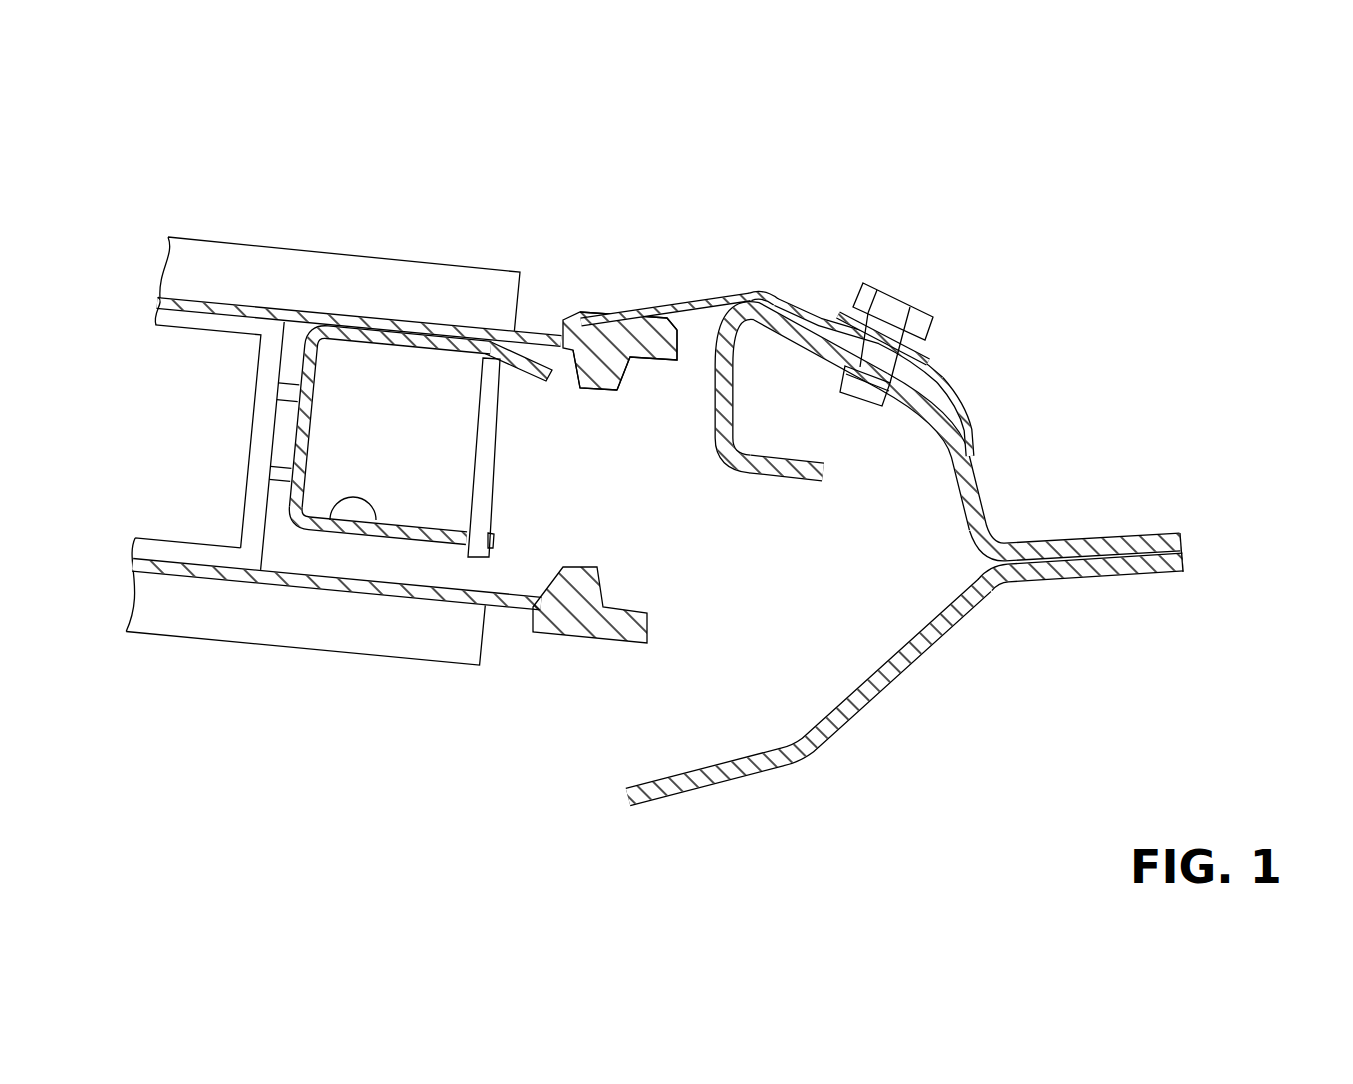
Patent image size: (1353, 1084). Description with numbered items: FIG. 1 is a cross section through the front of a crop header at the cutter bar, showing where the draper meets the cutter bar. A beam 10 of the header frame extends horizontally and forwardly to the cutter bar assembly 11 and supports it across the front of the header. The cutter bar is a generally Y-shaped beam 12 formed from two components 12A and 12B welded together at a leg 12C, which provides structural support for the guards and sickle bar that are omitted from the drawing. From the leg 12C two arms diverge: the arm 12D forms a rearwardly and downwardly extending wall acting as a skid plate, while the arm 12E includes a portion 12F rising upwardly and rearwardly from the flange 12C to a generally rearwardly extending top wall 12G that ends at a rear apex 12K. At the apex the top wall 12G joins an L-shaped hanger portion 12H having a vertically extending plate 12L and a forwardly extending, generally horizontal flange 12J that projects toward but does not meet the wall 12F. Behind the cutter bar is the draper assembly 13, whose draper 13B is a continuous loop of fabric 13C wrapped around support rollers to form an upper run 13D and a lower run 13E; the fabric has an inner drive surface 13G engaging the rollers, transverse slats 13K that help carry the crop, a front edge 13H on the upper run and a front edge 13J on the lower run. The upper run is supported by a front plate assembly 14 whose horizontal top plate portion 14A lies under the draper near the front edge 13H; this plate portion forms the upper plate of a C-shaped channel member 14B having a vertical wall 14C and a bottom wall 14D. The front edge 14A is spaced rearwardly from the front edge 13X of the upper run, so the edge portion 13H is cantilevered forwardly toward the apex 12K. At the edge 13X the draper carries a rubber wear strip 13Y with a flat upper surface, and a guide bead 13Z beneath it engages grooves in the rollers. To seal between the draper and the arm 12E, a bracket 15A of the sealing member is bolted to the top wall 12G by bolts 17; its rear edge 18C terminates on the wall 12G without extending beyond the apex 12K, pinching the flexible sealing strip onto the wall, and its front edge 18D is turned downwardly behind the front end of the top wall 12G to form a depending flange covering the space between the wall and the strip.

The beam 10 is at (702, 473).
The cutter bar assembly 11 is at (929, 511).
The cutter bar support beam 12 is at (929, 511).
The beam component 12A is at (1185, 540).
The beam component 12B is at (1120, 580).
The leg 12C is at (1106, 546).
The arm 12D is at (738, 755).
The arm 12E is at (930, 356).
The portion 12F is at (975, 480).
The top wall 12G is at (820, 330).
The L-shaped hanger portion 12H is at (718, 395).
The horizontal flange 12J is at (777, 470).
The rear apex 12K is at (743, 292).
The vertical plate 12L is at (728, 432).
The draper assembly 13 is at (401, 428).
The draper 13B is at (331, 292).
The fabric band 13C is at (263, 600).
The upper run 13D is at (229, 303).
The lower run 13E is at (168, 600).
The inner drive surface 13G is at (360, 334).
The front edge of upper run 13H is at (541, 320).
The front edge of lower run 13J is at (560, 636).
The transverse slats 13K is at (291, 270).
The front edge 13X is at (660, 340).
The rubber wear strip 13Y is at (651, 351).
The guide bead 13Z is at (602, 369).
The front plate assembly 14 is at (345, 462).
The top plate portion 14A is at (432, 340).
The C-shaped channel member 14B is at (365, 528).
The vertical wall 14C is at (300, 424).
The bottom wall 14D is at (347, 528).
The bracket 15A is at (964, 398).
The bolts 17 is at (897, 318).
The rear edge of bracket 18C is at (771, 312).
The front edge of bracket 18D is at (942, 440).